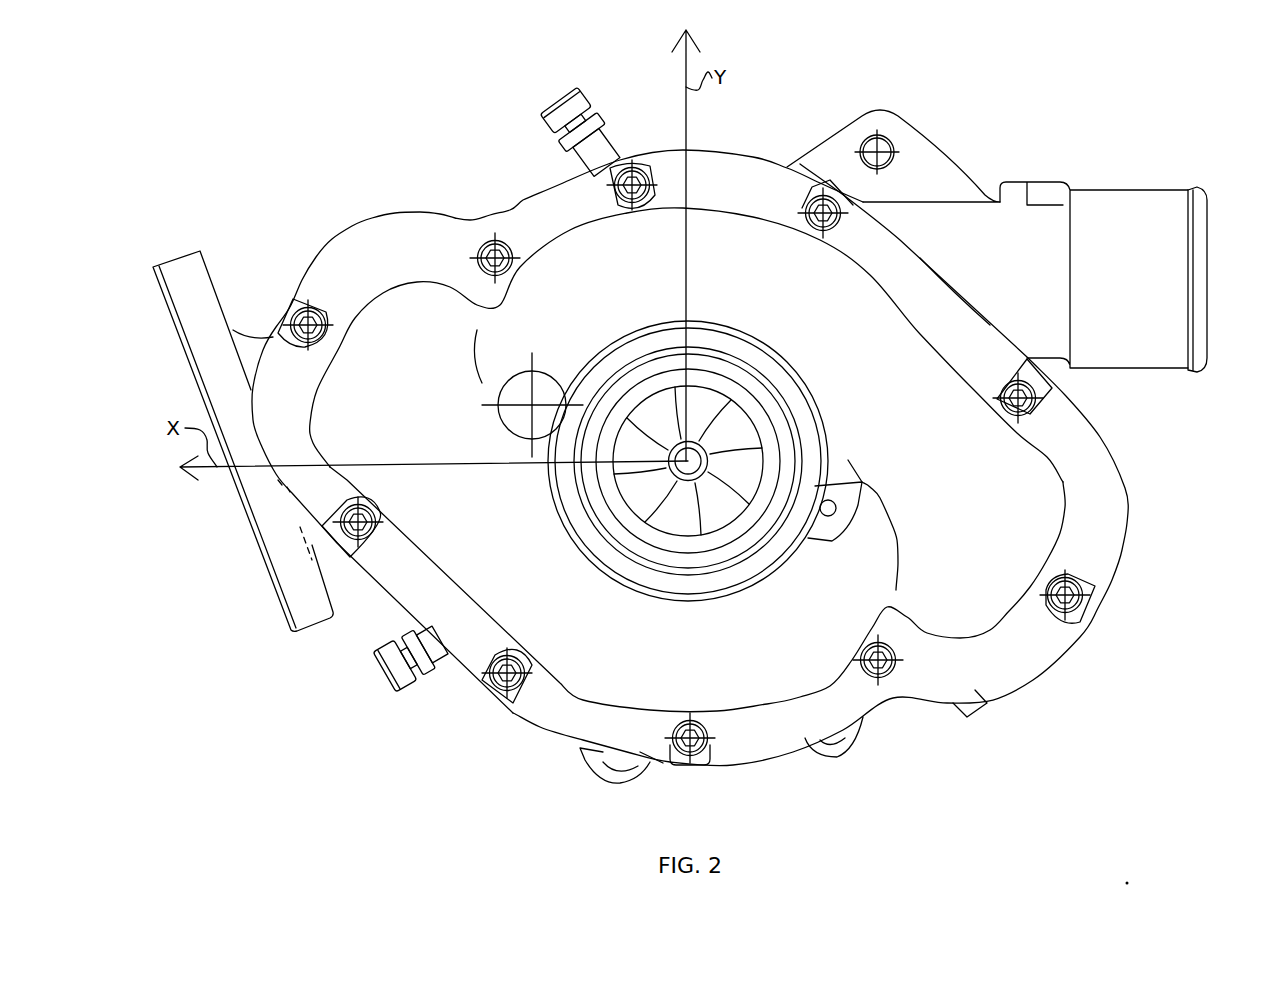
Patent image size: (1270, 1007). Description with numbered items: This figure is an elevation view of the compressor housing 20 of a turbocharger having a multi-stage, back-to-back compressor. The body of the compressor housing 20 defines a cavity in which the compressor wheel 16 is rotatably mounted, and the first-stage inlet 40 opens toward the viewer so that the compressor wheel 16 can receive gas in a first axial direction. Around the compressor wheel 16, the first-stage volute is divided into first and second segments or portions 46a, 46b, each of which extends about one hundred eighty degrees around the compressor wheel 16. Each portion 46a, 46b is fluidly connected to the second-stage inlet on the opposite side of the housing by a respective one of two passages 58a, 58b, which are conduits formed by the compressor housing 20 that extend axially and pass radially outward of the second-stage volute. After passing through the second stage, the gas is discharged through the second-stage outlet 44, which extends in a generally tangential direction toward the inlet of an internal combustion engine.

The compressor housing 20 is at (708, 429).
The compressor wheel 16 is at (730, 427).
The first-stage inlet 40 is at (746, 390).
The second-stage outlet 44 is at (1210, 265).
The first portion of first-stage volute 46a is at (703, 240).
The second portion of first-stage volute 46b is at (652, 652).
The passage 58a is at (1043, 505).
The passage 58b is at (333, 445).